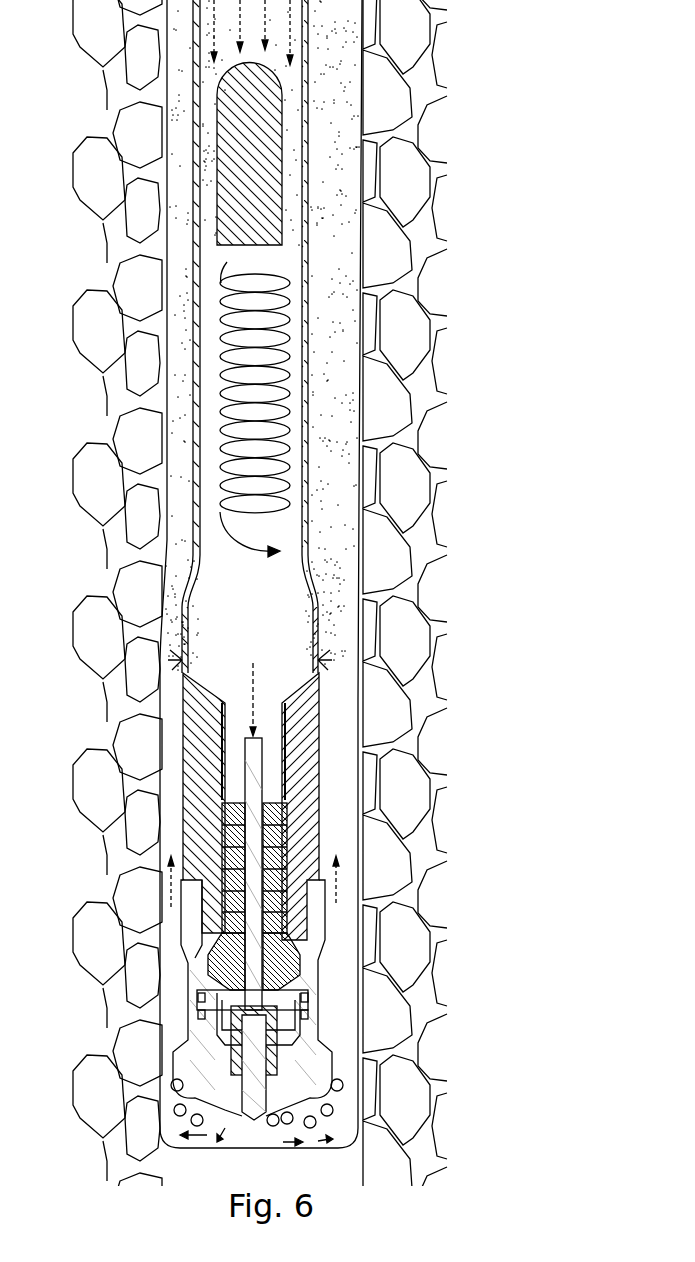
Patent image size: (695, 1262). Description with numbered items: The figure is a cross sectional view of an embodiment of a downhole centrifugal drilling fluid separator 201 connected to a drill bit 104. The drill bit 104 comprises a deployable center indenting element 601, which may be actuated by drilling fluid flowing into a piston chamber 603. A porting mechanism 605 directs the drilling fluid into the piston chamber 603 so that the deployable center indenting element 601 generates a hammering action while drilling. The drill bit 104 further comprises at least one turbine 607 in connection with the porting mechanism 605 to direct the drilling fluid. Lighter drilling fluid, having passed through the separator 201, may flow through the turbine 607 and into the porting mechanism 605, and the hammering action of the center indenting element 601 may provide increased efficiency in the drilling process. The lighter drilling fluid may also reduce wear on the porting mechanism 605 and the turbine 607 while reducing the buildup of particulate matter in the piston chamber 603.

The drill bit 104 is at (365, 1104).
The downhole centrifugal drilling fluid separator 201 is at (340, 410).
The turbine 607 is at (300, 838).
The porting mechanism 605 is at (290, 988).
The piston chamber 603 is at (280, 1010).
The deployable center indenting element 601 is at (285, 1093).